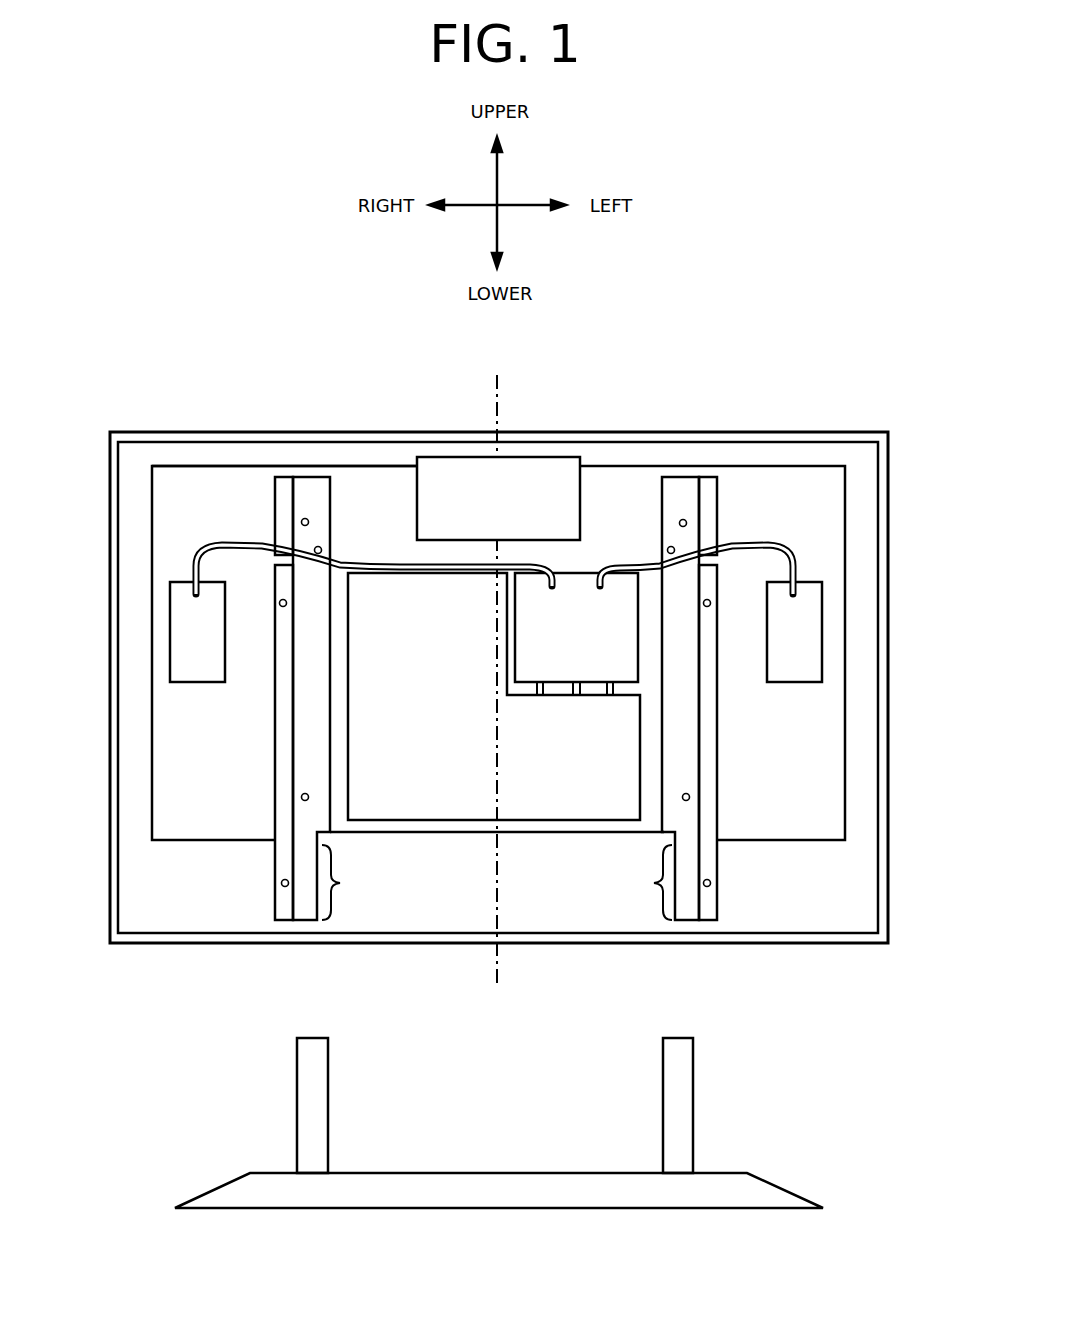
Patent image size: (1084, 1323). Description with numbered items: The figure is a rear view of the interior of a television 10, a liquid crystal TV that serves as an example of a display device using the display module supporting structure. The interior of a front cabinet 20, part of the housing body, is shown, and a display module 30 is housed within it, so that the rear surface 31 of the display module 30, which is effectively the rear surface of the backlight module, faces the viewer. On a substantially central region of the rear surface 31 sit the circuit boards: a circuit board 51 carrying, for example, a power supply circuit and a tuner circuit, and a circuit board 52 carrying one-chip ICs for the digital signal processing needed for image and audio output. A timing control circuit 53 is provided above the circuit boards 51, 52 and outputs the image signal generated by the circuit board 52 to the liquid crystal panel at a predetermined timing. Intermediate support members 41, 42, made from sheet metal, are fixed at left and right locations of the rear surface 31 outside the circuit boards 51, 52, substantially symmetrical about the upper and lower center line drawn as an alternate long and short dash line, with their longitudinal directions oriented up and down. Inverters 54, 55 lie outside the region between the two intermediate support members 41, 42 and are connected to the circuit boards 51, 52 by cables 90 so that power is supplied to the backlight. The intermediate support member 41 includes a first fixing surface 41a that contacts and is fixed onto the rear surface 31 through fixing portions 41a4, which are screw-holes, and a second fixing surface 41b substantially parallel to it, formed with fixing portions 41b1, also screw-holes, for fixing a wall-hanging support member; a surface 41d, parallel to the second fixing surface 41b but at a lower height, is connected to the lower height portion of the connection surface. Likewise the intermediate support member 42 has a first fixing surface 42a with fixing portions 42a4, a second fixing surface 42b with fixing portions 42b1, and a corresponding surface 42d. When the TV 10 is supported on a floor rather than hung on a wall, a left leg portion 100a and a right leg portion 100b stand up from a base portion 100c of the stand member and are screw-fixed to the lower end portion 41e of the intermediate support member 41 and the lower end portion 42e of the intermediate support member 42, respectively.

The television 10 is at (780, 308).
The front cabinet 20 is at (856, 432).
The display module 30 is at (480, 587).
The rear surface 31 is at (232, 478).
The intermediate support member 41 is at (716, 673).
The first fixing surface 41a is at (708, 632).
The fixing portions 41a4 is at (670, 547).
The second fixing surface 41b is at (765, 651).
The fixing portions 41b1 is at (709, 606).
The surface 41d is at (713, 498).
The lower end portion 41e is at (637, 882).
The intermediate support member 42 is at (280, 675).
The first fixing surface 42a is at (280, 634).
The fixing portions 42a4 is at (320, 547).
The second fixing surface 42b is at (239, 783).
The fixing portions 42b1 is at (282, 606).
The surface 42d is at (283, 502).
The lower end portion 42e is at (356, 882).
The circuit board 51 is at (472, 805).
The circuit board 52 is at (582, 578).
The timing control circuit 53 is at (460, 466).
The inverter 54 is at (800, 673).
The inverter 55 is at (191, 675).
The cables 90 is at (216, 546).
The left leg portion 100a is at (693, 1052).
The right leg portion 100b is at (328, 1052).
The base portion 100c is at (760, 1185).